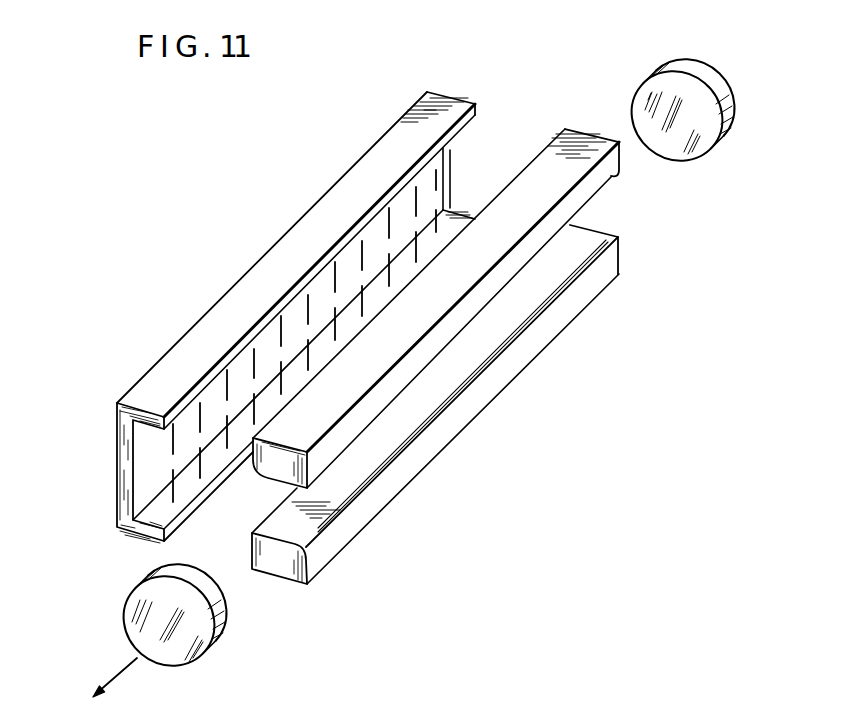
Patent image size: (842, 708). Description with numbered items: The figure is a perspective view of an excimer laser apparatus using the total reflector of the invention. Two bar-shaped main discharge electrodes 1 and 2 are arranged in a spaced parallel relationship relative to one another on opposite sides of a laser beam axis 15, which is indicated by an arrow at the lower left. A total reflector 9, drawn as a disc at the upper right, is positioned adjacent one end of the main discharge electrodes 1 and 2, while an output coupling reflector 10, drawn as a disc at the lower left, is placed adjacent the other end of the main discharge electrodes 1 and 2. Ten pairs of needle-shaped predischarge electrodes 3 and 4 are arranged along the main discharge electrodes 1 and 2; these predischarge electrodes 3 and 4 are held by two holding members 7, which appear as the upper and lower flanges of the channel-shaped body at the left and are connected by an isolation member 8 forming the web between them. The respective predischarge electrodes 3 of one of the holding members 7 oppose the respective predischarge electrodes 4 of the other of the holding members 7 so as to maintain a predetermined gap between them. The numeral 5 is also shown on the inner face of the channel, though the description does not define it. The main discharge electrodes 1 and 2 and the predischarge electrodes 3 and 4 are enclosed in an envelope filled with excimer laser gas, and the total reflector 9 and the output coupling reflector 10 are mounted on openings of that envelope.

The main discharge electrode 1 is at (403, 471).
The main discharge electrode 2 is at (550, 160).
The predischarge electrode 3 is at (360, 303).
The predischarge electrode 4 is at (363, 252).
The web-flange junction 5 is at (306, 323).
The holding member 7 is at (117, 405).
The isolation member 8 is at (125, 455).
The total reflector 9 is at (740, 113).
The output coupling reflector 10 is at (222, 627).
The laser beam axis 15 is at (123, 672).